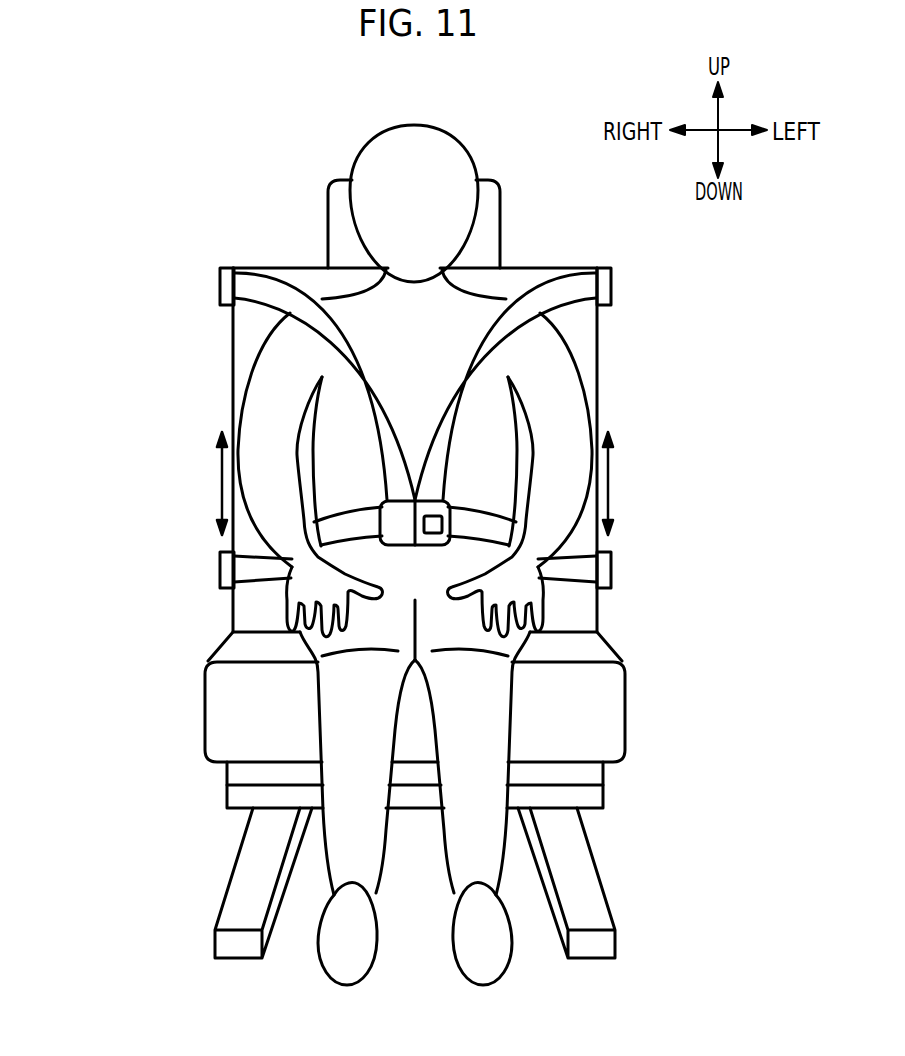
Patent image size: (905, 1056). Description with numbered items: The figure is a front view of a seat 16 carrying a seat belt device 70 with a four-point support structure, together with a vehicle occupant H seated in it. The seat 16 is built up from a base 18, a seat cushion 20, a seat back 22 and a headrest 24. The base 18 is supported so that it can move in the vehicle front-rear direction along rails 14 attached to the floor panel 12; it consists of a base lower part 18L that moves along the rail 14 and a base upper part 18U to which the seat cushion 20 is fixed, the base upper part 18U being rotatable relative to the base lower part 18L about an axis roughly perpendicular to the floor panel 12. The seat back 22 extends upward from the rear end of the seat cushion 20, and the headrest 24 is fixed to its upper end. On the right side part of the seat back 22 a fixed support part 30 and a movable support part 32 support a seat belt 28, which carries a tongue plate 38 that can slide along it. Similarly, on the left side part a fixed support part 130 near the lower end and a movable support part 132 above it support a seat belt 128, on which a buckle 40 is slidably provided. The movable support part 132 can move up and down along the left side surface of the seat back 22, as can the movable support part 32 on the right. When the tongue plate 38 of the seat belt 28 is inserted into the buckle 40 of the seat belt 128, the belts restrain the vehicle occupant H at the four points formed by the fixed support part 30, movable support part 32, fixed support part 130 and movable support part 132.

The vehicle occupant H is at (385, 130).
The floor panel 12 is at (641, 866).
The rails 14 is at (227, 893).
The seat 16 is at (592, 248).
The base 18 is at (124, 752).
The base upper part 18U is at (235, 773).
The base lower part 18L is at (240, 797).
The seat cushion 20 is at (205, 690).
The seat back 22 is at (245, 270).
The headrest 24 is at (496, 178).
The seat belt 28 is at (337, 331).
The seat belt 128 is at (473, 363).
The fixed support part 30 is at (219, 568).
The fixed support part 130 is at (612, 569).
The movable support part 32 is at (219, 285).
The movable support part 132 is at (612, 286).
The tongue plate 38 is at (397, 537).
The buckle 40 is at (431, 537).
The seat belt device 70 is at (150, 442).